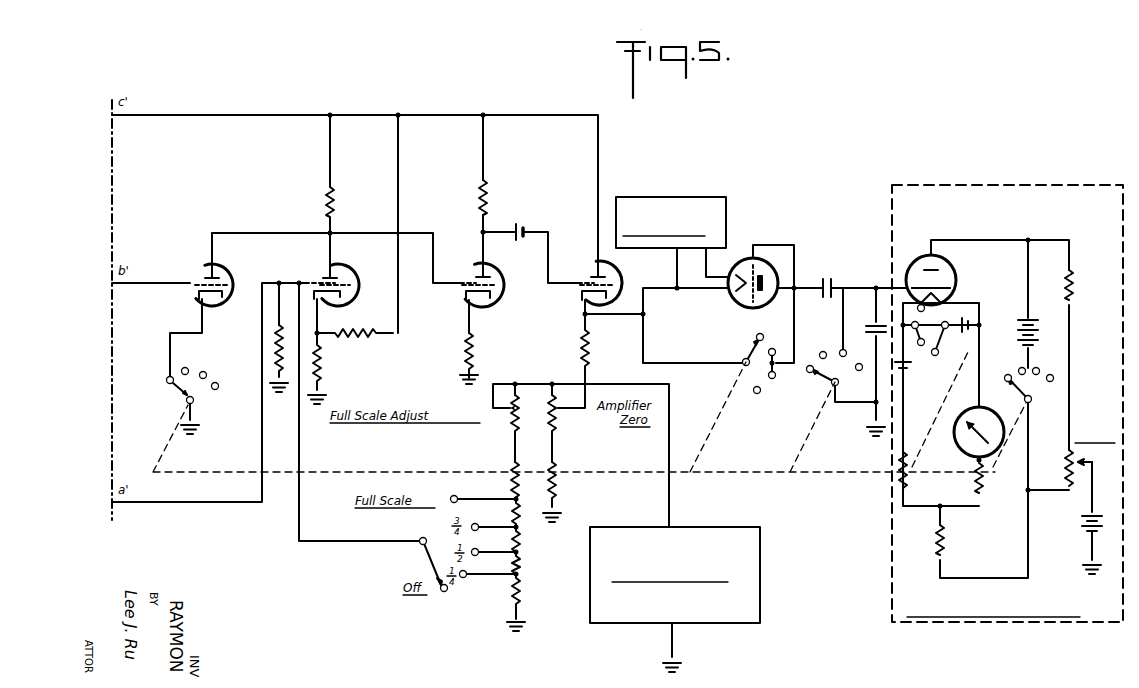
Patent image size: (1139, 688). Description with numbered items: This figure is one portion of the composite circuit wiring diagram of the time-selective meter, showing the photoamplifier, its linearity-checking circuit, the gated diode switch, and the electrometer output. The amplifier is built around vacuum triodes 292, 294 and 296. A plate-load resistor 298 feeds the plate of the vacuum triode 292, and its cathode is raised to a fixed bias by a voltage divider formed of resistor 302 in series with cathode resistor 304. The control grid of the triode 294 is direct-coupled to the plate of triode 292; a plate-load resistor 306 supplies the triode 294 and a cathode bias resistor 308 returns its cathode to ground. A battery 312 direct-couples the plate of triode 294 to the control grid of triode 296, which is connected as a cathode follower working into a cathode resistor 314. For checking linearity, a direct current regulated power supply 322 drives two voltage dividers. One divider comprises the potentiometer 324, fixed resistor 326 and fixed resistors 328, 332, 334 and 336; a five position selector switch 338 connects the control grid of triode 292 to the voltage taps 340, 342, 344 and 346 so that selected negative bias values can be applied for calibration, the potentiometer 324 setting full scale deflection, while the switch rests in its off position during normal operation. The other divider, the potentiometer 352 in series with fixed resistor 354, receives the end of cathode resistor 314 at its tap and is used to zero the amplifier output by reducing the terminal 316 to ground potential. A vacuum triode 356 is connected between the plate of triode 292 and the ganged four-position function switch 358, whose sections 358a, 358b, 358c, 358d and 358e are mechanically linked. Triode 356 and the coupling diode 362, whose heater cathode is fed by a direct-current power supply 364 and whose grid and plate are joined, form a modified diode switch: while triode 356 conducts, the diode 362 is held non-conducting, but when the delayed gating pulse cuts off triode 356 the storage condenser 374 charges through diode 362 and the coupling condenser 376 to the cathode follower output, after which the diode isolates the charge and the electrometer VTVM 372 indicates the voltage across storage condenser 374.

The vacuum triode 292 is at (348, 268).
The vacuum triode 294 is at (462, 300).
The vacuum triode 296 is at (622, 283).
The plate-load resistor 298 is at (325, 202).
The resistor 302 is at (354, 332).
The cathode resistor 304 is at (322, 361).
The plate-load resistor 306 is at (486, 200).
The cathode bias resistor 308 is at (465, 347).
The battery 312 is at (524, 218).
The cathode resistor 314 is at (583, 343).
The terminal 316 is at (584, 315).
The direct current regulated power supply 322 is at (712, 527).
The potentiometer 324 is at (510, 427).
The fixed resistor 326 is at (514, 467).
The fixed resistor 328 is at (520, 520).
The fixed resistor 332 is at (520, 547).
The fixed resistor 334 is at (520, 570).
The fixed resistor 336 is at (520, 593).
The five position selector switch 338 is at (435, 576).
The voltage tap 340 is at (484, 491).
The voltage tap 342 is at (494, 519).
The voltage tap 344 is at (494, 544).
The voltage tap 346 is at (488, 589).
The potentiometer 352 is at (555, 428).
The fixed resistor 354 is at (554, 463).
The vacuum triode 356 is at (202, 266).
The ganged four-position function switch 358 is at (229, 472).
The function switch section 358a is at (184, 394).
The function switch section 358b is at (752, 348).
The function switch section 358c is at (818, 374).
The function switch section 358d is at (952, 372).
The function switch section 358e is at (1008, 378).
The coupling diode 362 is at (740, 257).
The direct-current power supply 364 is at (727, 213).
The electrometer VTVM 372 is at (1007, 391).
The storage condenser 374 is at (863, 340).
The coupling condenser 376 is at (827, 278).